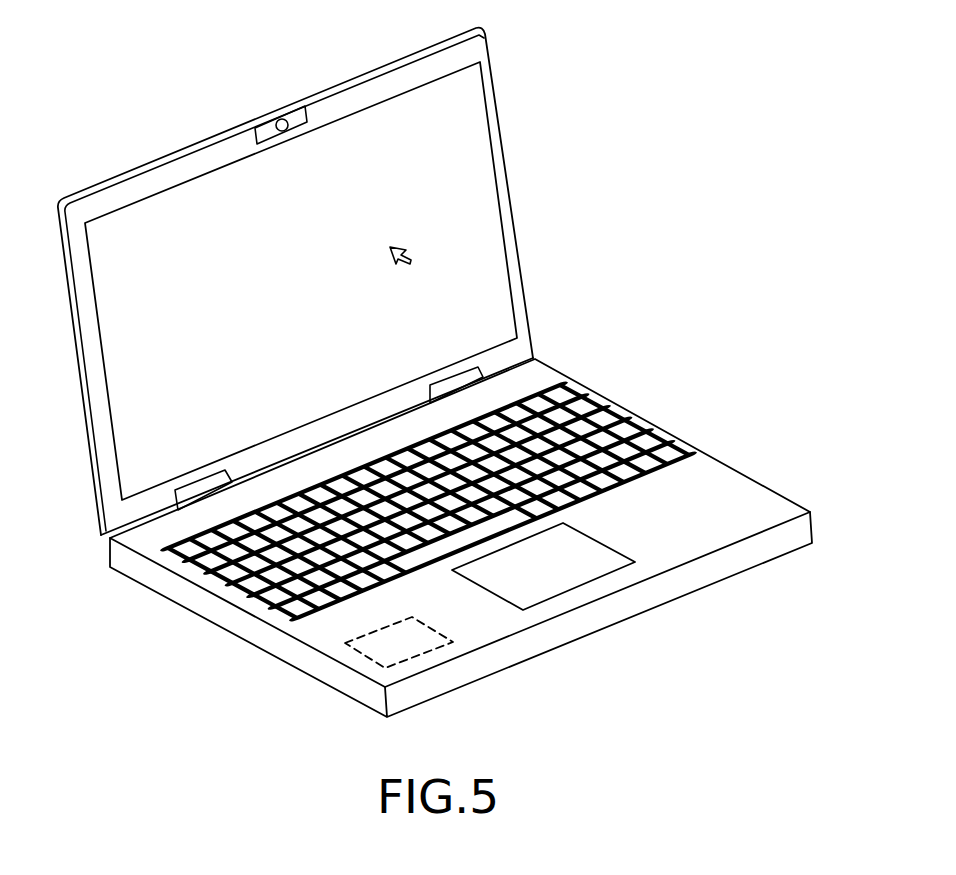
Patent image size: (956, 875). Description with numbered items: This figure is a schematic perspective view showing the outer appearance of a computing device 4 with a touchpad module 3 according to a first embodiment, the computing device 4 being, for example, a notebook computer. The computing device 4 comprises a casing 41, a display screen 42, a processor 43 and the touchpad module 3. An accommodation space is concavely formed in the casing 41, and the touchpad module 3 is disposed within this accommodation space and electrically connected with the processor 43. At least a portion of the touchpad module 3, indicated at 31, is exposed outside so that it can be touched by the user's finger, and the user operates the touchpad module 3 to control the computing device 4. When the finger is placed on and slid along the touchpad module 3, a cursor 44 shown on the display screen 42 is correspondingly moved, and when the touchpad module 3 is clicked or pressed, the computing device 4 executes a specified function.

The computing device 4 is at (435, 382).
The casing 41 is at (742, 487).
The display screen 42 is at (472, 143).
The processor 43 is at (356, 657).
The cursor 44 is at (392, 247).
The touchpad module 3 is at (554, 588).
The touch surface of the touch pad 31 is at (583, 553).